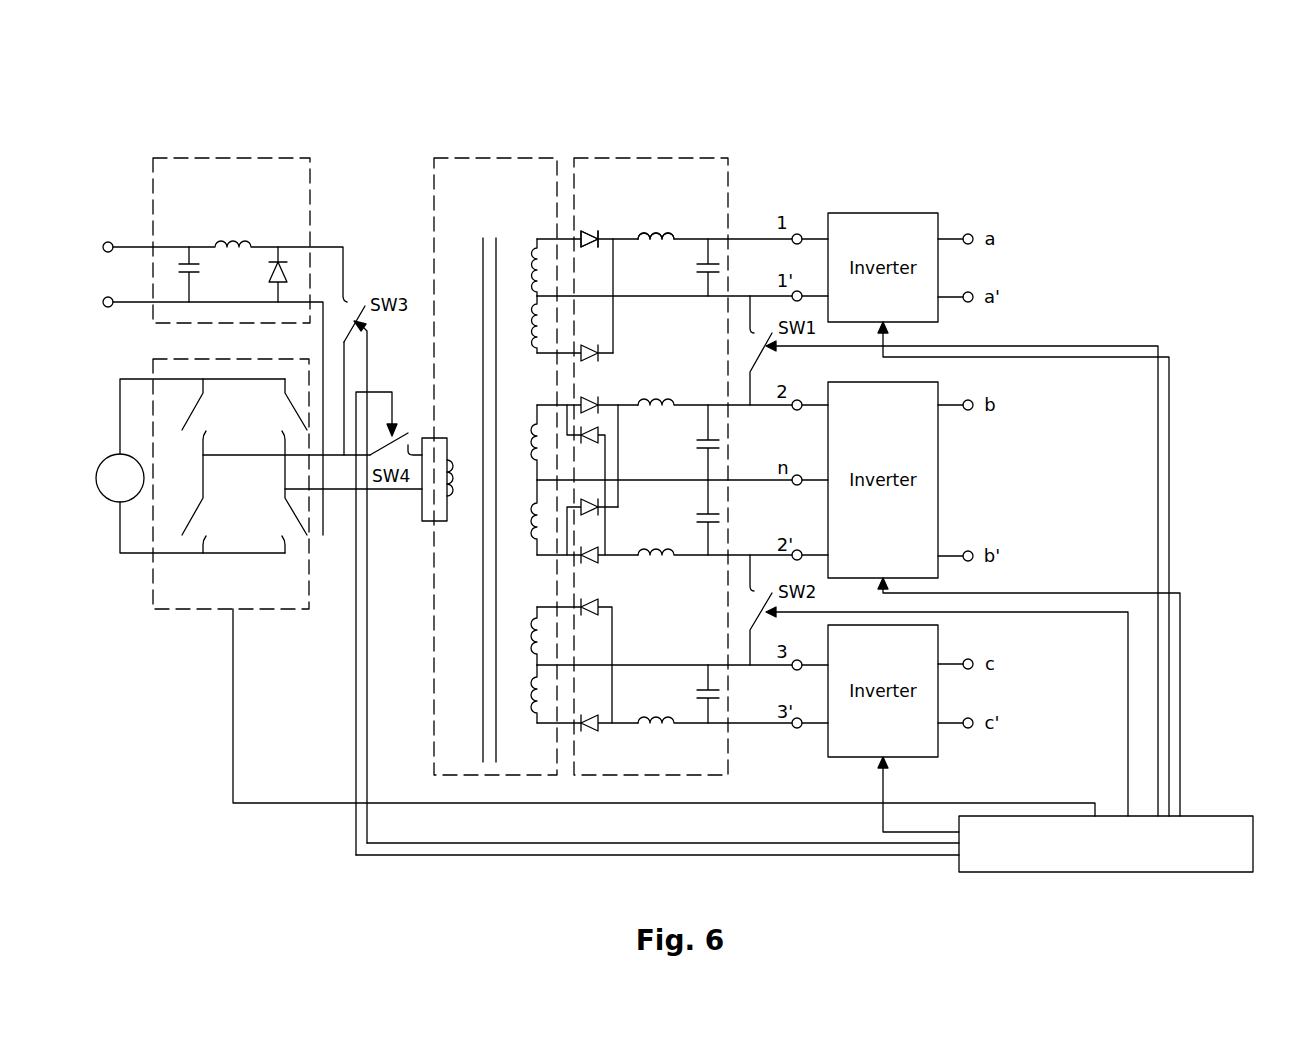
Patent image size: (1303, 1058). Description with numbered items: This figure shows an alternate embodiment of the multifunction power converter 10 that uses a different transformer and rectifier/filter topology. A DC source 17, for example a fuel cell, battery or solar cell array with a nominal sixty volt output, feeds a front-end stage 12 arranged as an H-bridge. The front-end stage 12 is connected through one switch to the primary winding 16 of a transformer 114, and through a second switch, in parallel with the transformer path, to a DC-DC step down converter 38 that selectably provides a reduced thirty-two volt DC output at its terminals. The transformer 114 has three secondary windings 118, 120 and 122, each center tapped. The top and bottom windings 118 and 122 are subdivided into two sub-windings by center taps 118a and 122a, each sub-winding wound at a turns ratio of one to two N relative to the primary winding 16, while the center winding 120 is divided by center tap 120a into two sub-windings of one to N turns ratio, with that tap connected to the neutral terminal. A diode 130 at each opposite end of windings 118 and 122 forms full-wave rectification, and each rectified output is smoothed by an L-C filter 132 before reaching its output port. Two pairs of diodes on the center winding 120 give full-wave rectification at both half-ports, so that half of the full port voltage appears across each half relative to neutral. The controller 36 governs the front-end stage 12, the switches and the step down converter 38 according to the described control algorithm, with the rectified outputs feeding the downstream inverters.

The multifunction power converter 10 is at (1019, 238).
The front-end stage 12 is at (130, 553).
The primary winding 16 is at (428, 522).
The DC source 17 is at (113, 454).
The controller 36 is at (1208, 815).
The DC-DC step down converter 38 is at (203, 158).
The transformer 114 is at (480, 158).
The secondary winding 118 is at (530, 322).
The center tap 118a is at (530, 296).
The secondary winding 120 is at (711, 158).
The center tap 120a is at (535, 483).
The secondary winding 122 is at (535, 692).
The center tap 122a is at (535, 664).
The diode 130 is at (585, 236).
The L-C filter 132 is at (673, 238).